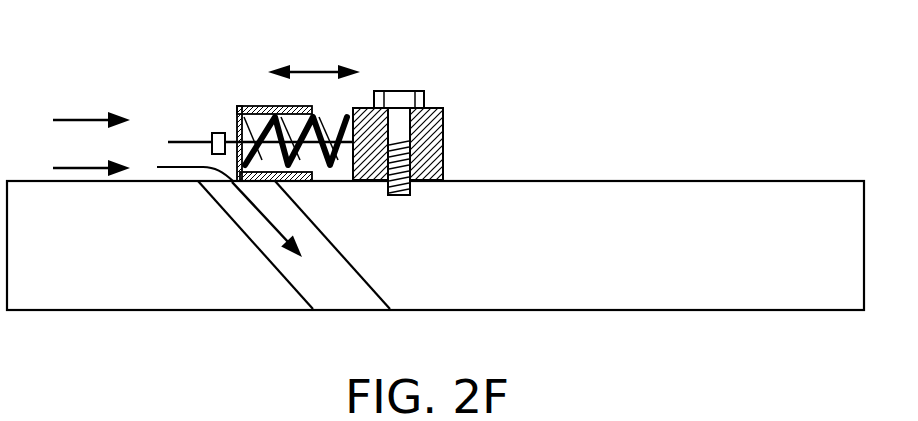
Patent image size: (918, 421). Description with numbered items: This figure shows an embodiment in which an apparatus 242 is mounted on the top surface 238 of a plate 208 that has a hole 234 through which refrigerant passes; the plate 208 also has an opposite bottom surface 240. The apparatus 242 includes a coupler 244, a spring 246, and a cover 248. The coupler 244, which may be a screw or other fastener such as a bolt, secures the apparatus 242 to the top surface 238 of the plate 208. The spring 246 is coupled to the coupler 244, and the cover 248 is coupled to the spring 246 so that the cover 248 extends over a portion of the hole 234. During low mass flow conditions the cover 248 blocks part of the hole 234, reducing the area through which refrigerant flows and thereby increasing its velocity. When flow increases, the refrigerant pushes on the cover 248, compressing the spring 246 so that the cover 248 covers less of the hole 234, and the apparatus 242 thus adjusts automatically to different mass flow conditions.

The plate 208 is at (702, 210).
The hole 234 is at (352, 262).
The top surface 238 is at (548, 181).
The bottom surface 240 is at (630, 310).
The apparatus 242 is at (402, 91).
The coupler 244 is at (445, 142).
The spring 246 is at (310, 152).
The cover 248 is at (262, 106).